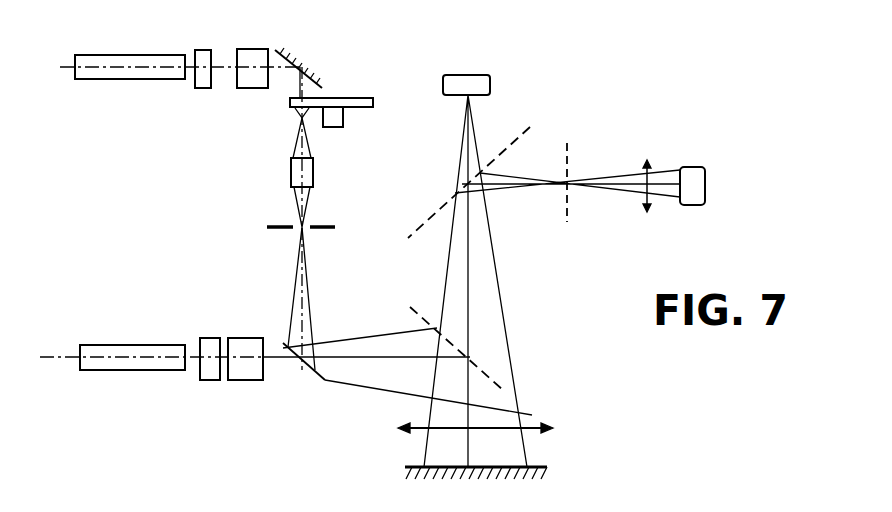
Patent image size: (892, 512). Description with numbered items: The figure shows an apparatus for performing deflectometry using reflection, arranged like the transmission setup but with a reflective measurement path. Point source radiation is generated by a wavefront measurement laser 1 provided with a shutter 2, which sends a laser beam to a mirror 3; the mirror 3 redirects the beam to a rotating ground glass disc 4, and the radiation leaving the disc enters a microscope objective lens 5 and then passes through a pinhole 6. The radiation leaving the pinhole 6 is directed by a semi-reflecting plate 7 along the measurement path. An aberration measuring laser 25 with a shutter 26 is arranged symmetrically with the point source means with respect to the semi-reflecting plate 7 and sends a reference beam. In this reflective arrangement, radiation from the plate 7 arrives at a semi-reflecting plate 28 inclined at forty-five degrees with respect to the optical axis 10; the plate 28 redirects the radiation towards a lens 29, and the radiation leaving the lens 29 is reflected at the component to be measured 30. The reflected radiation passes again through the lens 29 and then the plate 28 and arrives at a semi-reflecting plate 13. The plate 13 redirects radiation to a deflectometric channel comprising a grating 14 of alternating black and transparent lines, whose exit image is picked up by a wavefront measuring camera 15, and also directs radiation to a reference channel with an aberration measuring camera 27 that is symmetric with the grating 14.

The wavefront measurement laser 1 is at (110, 55).
The shutter 2 is at (257, 49).
The mirror 3 is at (313, 72).
The rotating ground glass disc 4 is at (360, 98).
The microscope objective lens 5 is at (291, 170).
The pinhole 6 is at (280, 223).
The semi-reflecting plate 7 is at (277, 335).
The optical axis 10 is at (357, 358).
The semi-reflecting plate 13 is at (508, 147).
The grating 14 is at (567, 145).
The wavefront measuring camera 15 is at (692, 178).
The laser for measuring aberration 25 is at (140, 345).
The shutter 26 is at (245, 370).
The camera for measuring aberration 27 is at (467, 83).
The semi-reflecting plate 28 is at (500, 390).
The lens 29 is at (493, 429).
The component to be measured 30 is at (537, 467).